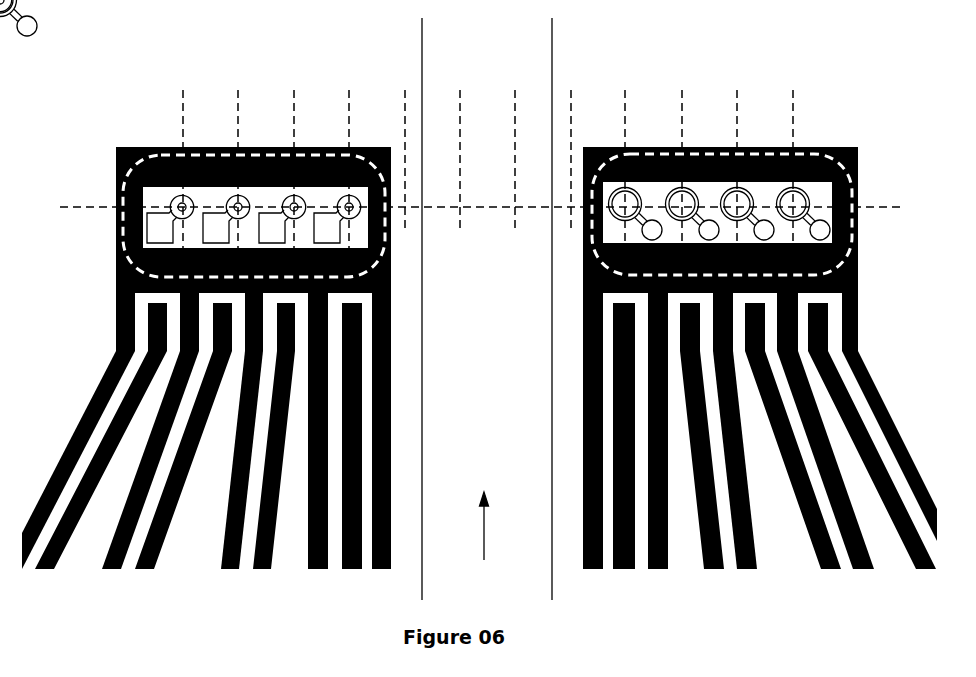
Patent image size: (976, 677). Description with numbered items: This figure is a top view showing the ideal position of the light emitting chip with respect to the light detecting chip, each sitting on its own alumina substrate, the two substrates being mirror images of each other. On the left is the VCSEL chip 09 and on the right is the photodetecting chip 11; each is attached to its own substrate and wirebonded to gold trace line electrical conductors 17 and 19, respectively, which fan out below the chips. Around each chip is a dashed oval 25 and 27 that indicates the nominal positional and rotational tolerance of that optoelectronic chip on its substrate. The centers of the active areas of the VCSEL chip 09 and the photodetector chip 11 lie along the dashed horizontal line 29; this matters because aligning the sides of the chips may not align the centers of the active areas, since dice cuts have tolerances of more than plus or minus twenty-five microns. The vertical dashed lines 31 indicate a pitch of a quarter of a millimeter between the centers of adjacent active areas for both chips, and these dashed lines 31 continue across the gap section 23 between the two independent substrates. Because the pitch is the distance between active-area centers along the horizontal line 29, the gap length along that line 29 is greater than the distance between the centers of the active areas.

The VCSEL array 09 is at (195, 238).
The photo-detector array 11 is at (782, 235).
The gold trace line electrical conductors 17 is at (115, 358).
The gold trace line electrical conductors 19 is at (858, 350).
The gap section 23 is at (484, 541).
The dashed oval 25 is at (147, 162).
The dashed oval 27 is at (828, 162).
The dashed horizontal line 29 is at (483, 207).
The vertical dashed lines 31 is at (294, 113).